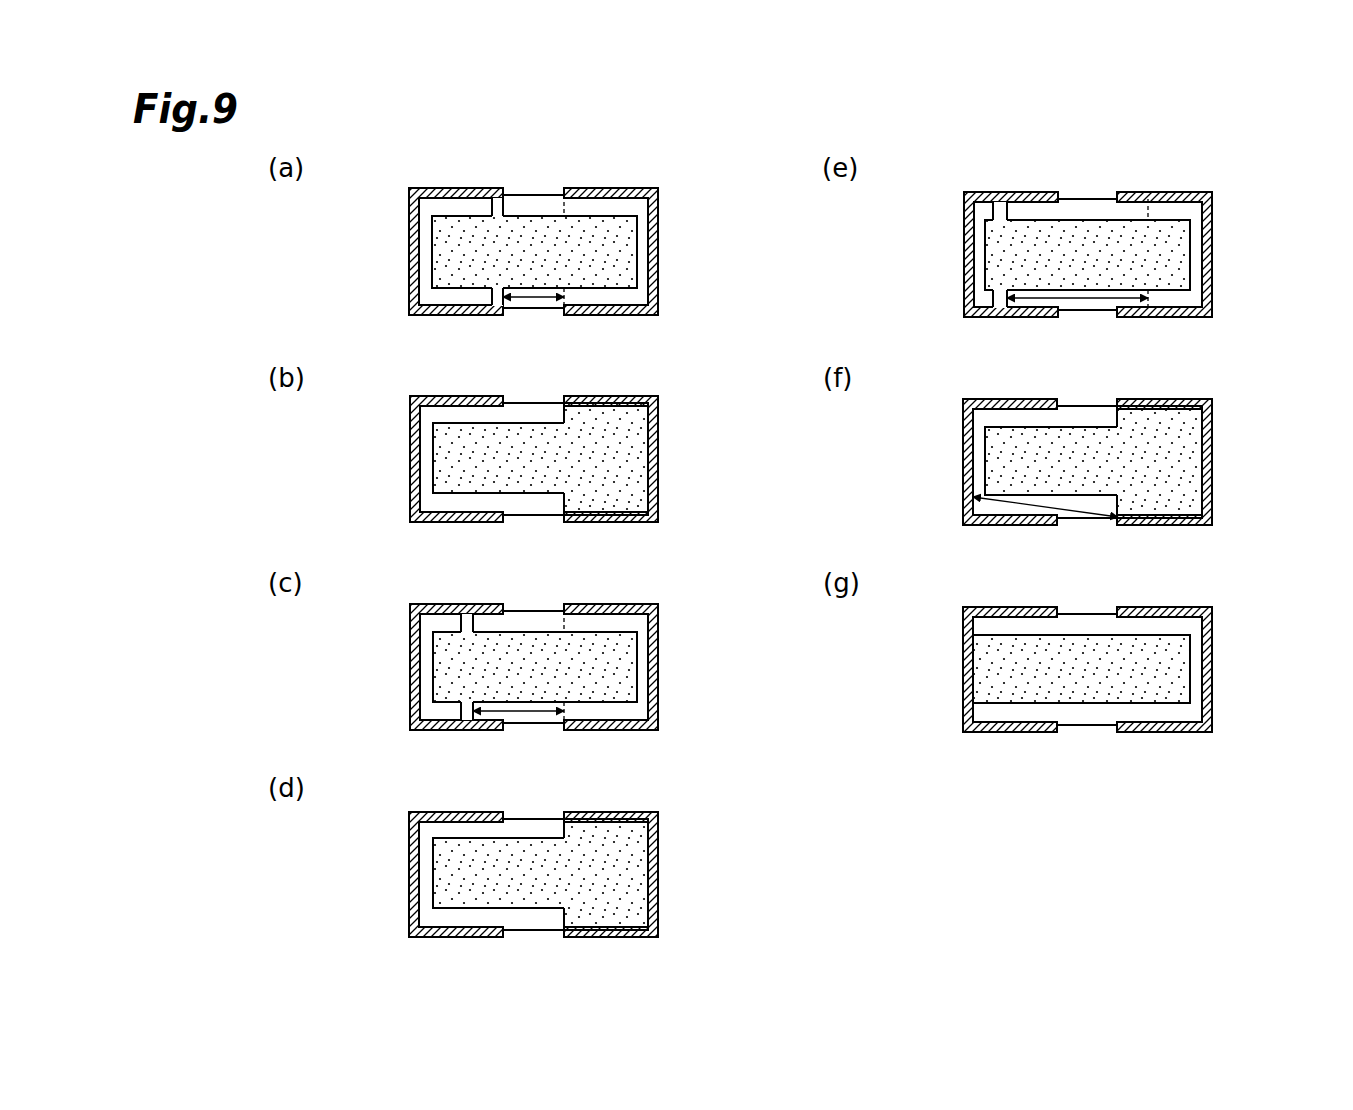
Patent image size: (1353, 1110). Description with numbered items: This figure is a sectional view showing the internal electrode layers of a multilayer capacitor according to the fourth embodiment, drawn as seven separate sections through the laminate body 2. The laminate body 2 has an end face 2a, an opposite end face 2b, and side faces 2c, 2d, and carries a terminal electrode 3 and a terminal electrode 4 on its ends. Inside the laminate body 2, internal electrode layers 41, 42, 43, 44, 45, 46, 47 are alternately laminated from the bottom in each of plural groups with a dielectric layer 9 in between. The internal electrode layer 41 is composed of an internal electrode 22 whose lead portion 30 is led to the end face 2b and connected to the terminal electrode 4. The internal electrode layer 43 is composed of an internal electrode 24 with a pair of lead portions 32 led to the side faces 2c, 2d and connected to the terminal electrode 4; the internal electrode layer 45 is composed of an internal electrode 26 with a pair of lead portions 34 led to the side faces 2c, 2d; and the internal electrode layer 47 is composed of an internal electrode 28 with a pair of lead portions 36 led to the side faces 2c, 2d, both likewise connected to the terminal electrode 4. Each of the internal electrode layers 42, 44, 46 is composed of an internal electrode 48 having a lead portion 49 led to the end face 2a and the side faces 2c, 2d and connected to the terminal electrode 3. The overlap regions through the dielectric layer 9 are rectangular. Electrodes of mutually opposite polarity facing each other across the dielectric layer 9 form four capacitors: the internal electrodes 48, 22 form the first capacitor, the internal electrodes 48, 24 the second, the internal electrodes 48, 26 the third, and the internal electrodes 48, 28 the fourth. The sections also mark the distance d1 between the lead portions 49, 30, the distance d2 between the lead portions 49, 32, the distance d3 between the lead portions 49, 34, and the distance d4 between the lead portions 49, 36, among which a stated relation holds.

The laminate body 2 is at (812, 483).
The end face 2a is at (970, 588).
The end face 2b is at (657, 592).
The side face 2c is at (810, 487).
The side face 2d is at (823, 636).
The terminal electrode 3 is at (915, 562).
The terminal electrode 4 is at (708, 562).
The dielectric layer 9 is at (815, 490).
The internal electrode 22 is at (1140, 670).
The internal electrode 24 is at (1037, 255).
The internal electrode 26 is at (483, 667).
The internal electrode 28 is at (483, 252).
The lead portion 30 is at (978, 668).
The lead portions 32 is at (977, 253).
The lead portions 34 is at (451, 667).
The lead portions 36 is at (469, 252).
The internal electrode layer 41 is at (1165, 707).
The internal electrode layer 42 is at (1009, 499).
The internal electrode layer 43 is at (1165, 293).
The internal electrode layer 44 is at (460, 912).
The internal electrode layer 45 is at (610, 708).
The internal electrode layer 46 is at (460, 498).
The internal electrode layer 47 is at (610, 293).
The internal electrode 48 is at (707, 665).
The lead portion 49 is at (923, 666).
The distance d1 is at (1073, 517).
The distance d2 is at (1087, 302).
The distance d3 is at (532, 717).
The distance d4 is at (532, 302).